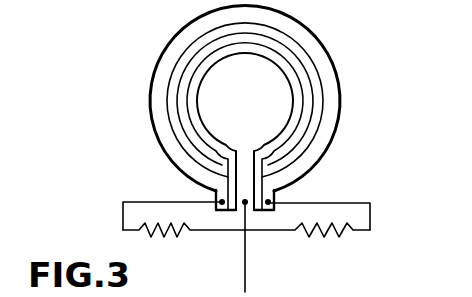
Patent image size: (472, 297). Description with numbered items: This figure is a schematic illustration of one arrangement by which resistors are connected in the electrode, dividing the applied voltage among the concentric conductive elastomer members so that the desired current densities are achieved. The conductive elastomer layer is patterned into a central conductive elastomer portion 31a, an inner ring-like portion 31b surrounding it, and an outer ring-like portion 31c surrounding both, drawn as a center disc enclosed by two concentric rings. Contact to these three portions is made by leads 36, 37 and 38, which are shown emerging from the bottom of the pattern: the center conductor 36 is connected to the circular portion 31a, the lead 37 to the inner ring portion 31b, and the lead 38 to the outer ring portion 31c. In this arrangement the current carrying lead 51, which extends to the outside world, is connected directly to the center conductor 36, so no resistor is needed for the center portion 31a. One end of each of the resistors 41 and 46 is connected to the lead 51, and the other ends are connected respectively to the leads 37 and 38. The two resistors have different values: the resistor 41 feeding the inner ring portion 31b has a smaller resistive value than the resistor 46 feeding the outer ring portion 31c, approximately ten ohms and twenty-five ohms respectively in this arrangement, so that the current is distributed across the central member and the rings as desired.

The central conductive elastomer portion 31a is at (258, 115).
The inner conductive elastomer ring-like portion 31b is at (205, 50).
The outer conductive elastomer ring-like portion 31c is at (320, 60).
The lead 36 is at (243, 160).
The lead 37 is at (278, 164).
The lead 38 is at (222, 201).
The thin film resistor 46 is at (143, 233).
The thin film resistor 41 is at (302, 244).
The lead 51 is at (243, 260).